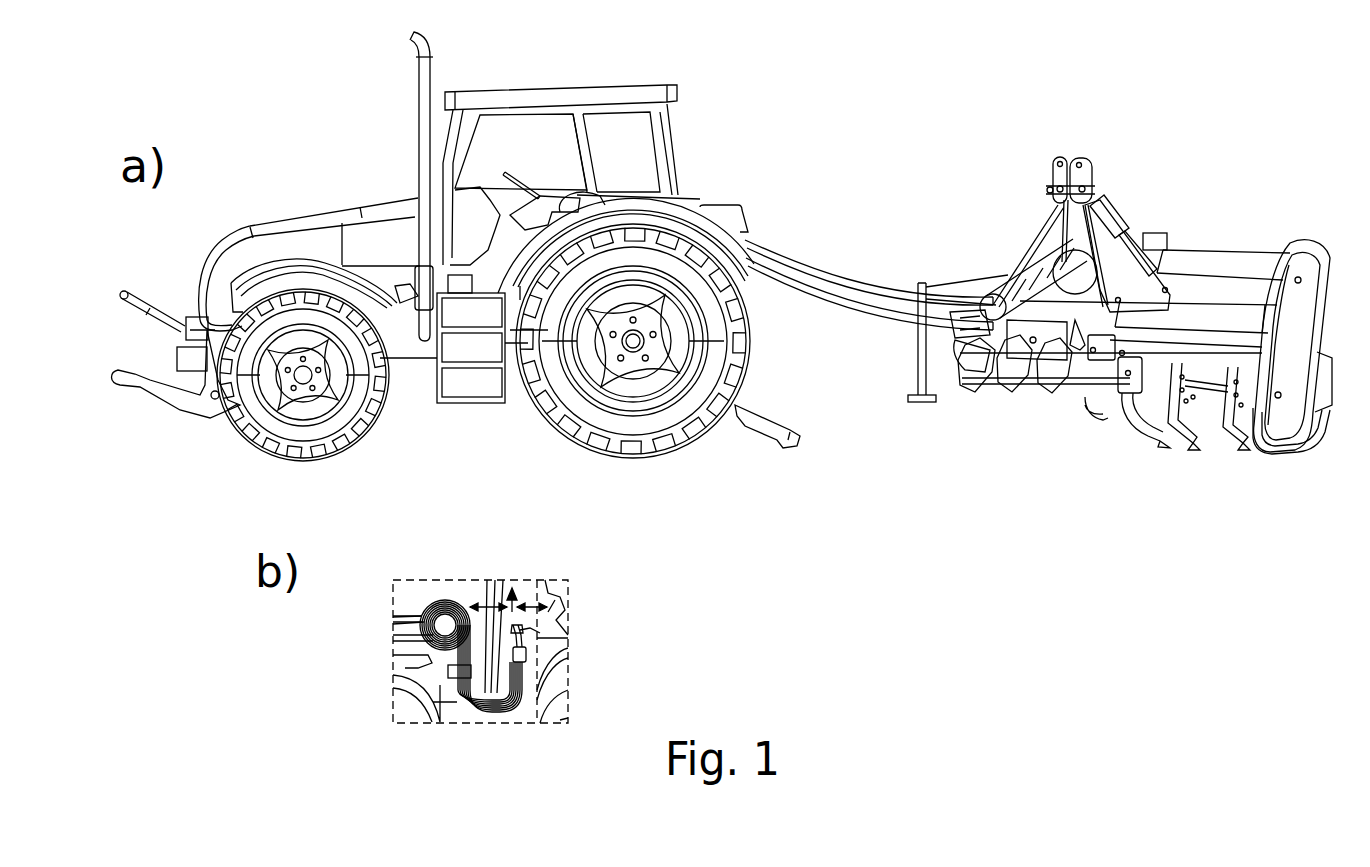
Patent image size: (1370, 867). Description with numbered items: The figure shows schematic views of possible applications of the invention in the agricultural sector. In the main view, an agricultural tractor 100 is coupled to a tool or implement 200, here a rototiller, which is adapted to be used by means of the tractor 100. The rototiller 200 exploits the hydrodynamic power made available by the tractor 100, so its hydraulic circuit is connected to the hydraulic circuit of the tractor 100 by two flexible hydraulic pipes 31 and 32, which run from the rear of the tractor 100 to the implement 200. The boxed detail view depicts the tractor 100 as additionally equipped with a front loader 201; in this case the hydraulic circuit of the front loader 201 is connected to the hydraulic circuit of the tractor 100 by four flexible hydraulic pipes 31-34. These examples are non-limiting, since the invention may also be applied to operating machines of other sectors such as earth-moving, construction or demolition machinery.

The agricultural tractor 100 is at (338, 186).
The tool or implement (rototiller) 200 is at (1210, 250).
The hydraulic pipe 31 is at (830, 280).
The hydraulic pipe 32 is at (811, 312).
The hydraulic pipes 31-34 is at (433, 600).
The front loader 201 is at (393, 613).